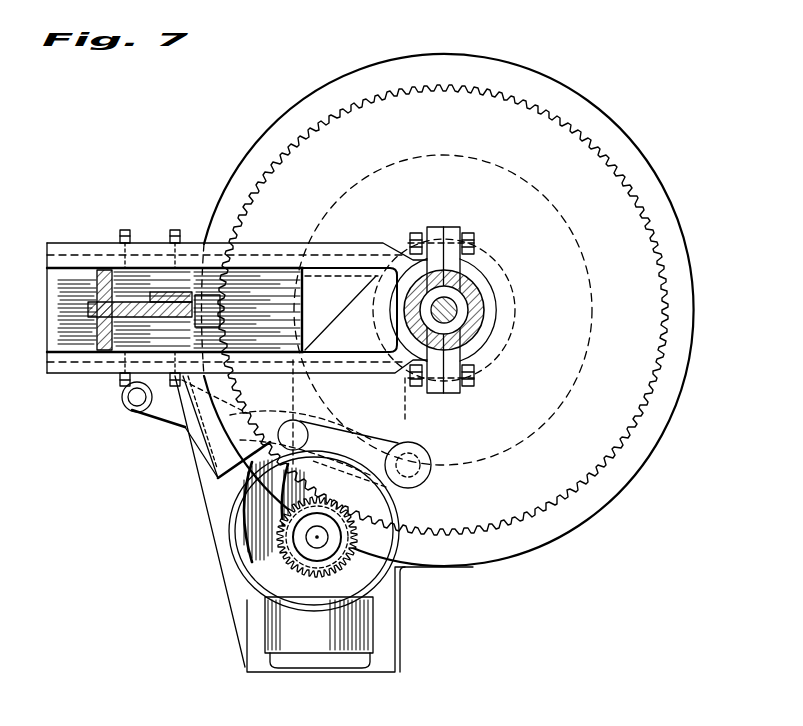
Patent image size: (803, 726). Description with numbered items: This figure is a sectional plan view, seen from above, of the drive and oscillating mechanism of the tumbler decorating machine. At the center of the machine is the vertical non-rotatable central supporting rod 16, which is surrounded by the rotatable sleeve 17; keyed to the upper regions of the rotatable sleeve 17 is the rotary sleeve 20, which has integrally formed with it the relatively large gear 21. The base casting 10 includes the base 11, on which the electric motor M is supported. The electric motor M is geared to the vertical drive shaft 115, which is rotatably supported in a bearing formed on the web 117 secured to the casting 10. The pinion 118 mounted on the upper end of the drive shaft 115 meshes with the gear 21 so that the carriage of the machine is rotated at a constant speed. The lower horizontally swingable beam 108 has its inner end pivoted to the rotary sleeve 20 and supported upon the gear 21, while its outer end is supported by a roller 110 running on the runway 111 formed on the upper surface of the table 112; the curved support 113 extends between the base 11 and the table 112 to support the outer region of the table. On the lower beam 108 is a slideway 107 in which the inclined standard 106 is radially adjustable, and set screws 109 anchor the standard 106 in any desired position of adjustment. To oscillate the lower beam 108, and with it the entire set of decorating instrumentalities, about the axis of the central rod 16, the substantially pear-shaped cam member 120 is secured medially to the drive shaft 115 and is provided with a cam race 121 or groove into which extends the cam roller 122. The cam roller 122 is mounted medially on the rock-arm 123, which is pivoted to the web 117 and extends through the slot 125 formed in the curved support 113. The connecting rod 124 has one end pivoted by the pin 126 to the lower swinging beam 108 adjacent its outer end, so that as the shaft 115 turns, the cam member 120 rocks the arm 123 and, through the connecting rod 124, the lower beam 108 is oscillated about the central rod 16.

The base casting 10 is at (546, 430).
The base 11 is at (489, 66).
The central supporting rod 16 is at (456, 316).
The rotatable sleeve 17 is at (467, 308).
The rotary sleeve 20 is at (483, 297).
The gear 21 is at (455, 534).
The inclined standard 106 is at (100, 262).
The slideway 107 is at (141, 257).
The lower beam 108 is at (52, 253).
The set screws 109 is at (130, 391).
The roller 110 is at (195, 310).
The runway 111 is at (212, 445).
The table 112 is at (270, 300).
The curved support 113 is at (204, 465).
The vertical drive shaft 115 is at (317, 537).
The web 117 is at (405, 420).
The pinion 118 is at (286, 561).
The cam member 120 is at (262, 586).
The cam race 121 is at (290, 531).
The cam roller 122 is at (262, 450).
The rock-arm 123 is at (160, 420).
The connecting rod 124 is at (120, 375).
The slot 125 is at (132, 408).
The pin 126 is at (95, 318).
The electric motor M is at (374, 637).